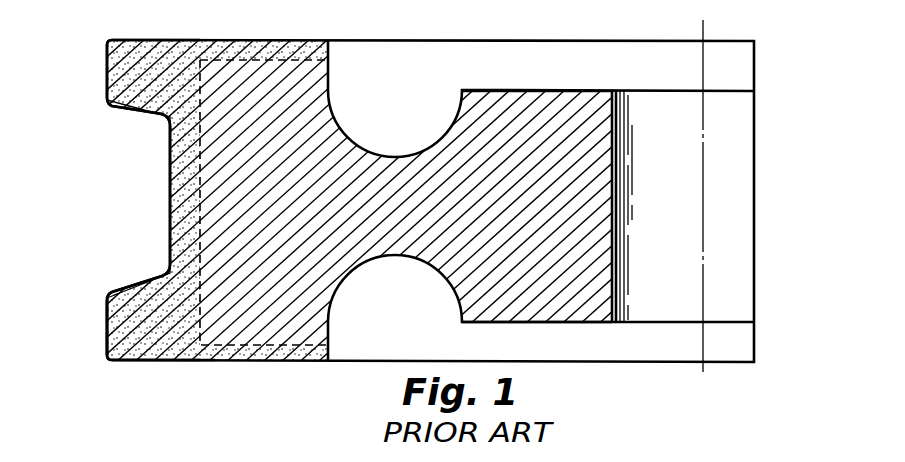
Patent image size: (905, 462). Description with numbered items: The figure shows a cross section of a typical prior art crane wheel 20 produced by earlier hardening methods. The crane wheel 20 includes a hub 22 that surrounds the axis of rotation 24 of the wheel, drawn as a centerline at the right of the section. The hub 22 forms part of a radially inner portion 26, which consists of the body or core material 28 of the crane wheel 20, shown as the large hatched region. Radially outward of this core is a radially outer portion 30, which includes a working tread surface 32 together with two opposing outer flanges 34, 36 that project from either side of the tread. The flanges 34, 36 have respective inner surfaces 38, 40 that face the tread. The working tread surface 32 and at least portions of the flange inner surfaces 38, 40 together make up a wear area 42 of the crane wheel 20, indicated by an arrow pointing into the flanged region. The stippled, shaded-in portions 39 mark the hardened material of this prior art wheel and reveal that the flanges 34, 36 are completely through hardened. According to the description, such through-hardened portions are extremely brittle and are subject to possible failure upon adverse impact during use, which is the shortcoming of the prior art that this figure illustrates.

The crane wheel 20 is at (318, 76).
The hub 22 is at (618, 104).
The axis of rotation 24 is at (705, 30).
The radially inner portion 26 is at (549, 102).
The body or core material 28 is at (393, 211).
The radially outer portion 30 is at (170, 44).
The working tread surface 32 is at (170, 202).
The outer flange 34 is at (107, 57).
The outer flange 36 is at (107, 337).
The flange inner surface 38 is at (133, 113).
The shaded-in portions 39 is at (107, 301).
The flange inner surface 40 is at (140, 287).
The wear area 42 is at (134, 170).